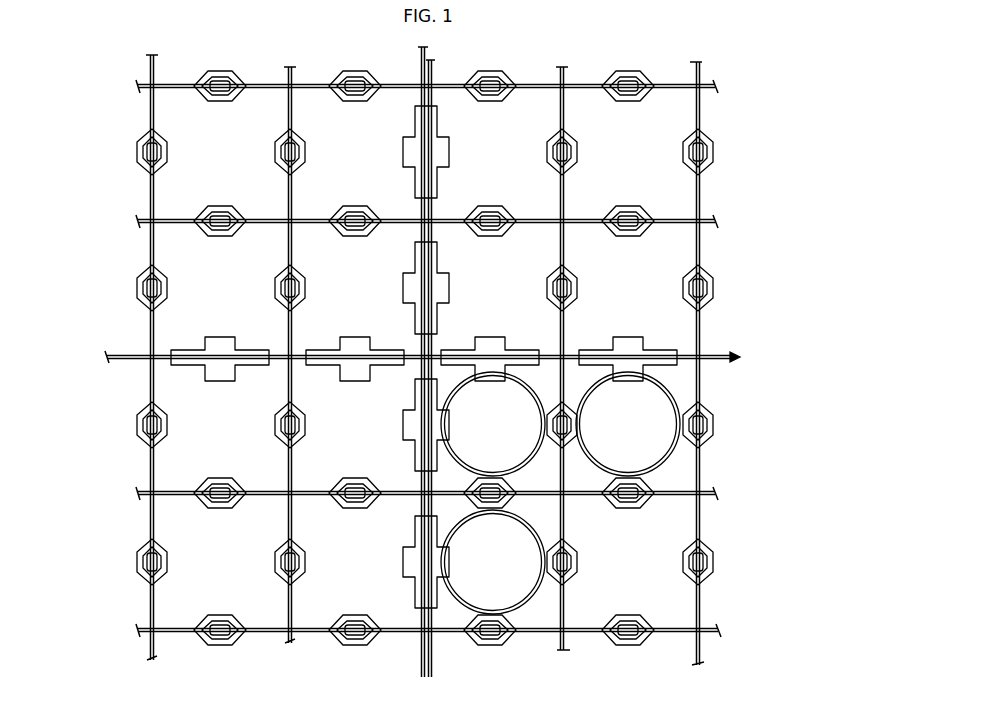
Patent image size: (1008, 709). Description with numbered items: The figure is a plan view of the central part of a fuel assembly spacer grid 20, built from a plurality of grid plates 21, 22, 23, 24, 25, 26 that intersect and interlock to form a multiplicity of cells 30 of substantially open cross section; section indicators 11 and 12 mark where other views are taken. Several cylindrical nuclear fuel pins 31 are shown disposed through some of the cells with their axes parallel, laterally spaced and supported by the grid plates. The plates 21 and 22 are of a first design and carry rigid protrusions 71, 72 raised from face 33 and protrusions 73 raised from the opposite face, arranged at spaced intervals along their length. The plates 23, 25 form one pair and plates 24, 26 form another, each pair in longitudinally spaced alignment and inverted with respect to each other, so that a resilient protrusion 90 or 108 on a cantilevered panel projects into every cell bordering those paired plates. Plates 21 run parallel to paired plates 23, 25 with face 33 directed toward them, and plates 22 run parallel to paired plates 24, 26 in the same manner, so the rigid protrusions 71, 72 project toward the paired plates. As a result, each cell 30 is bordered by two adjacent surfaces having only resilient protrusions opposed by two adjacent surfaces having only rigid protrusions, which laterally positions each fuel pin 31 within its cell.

The fuel assembly spacer grid 20 is at (120, 258).
The grid plate 21 is at (140, 218).
The grid plate 22 is at (156, 80).
The grid plate 23 is at (718, 362).
The grid plate 24 is at (432, 648).
The grid plate 25 is at (718, 355).
The grid plate 26 is at (420, 648).
The cell 30 is at (208, 163).
The nuclear fuel pin 31 is at (450, 453).
The face 33 is at (678, 88).
The protrusion 71 is at (490, 214).
The protrusion 72 is at (548, 408).
The protrusion 73 is at (498, 232).
The protrusion 90 is at (495, 345).
The protrusion 108 is at (500, 377).
The section line 11 is at (380, 265).
The section line 12 is at (740, 476).